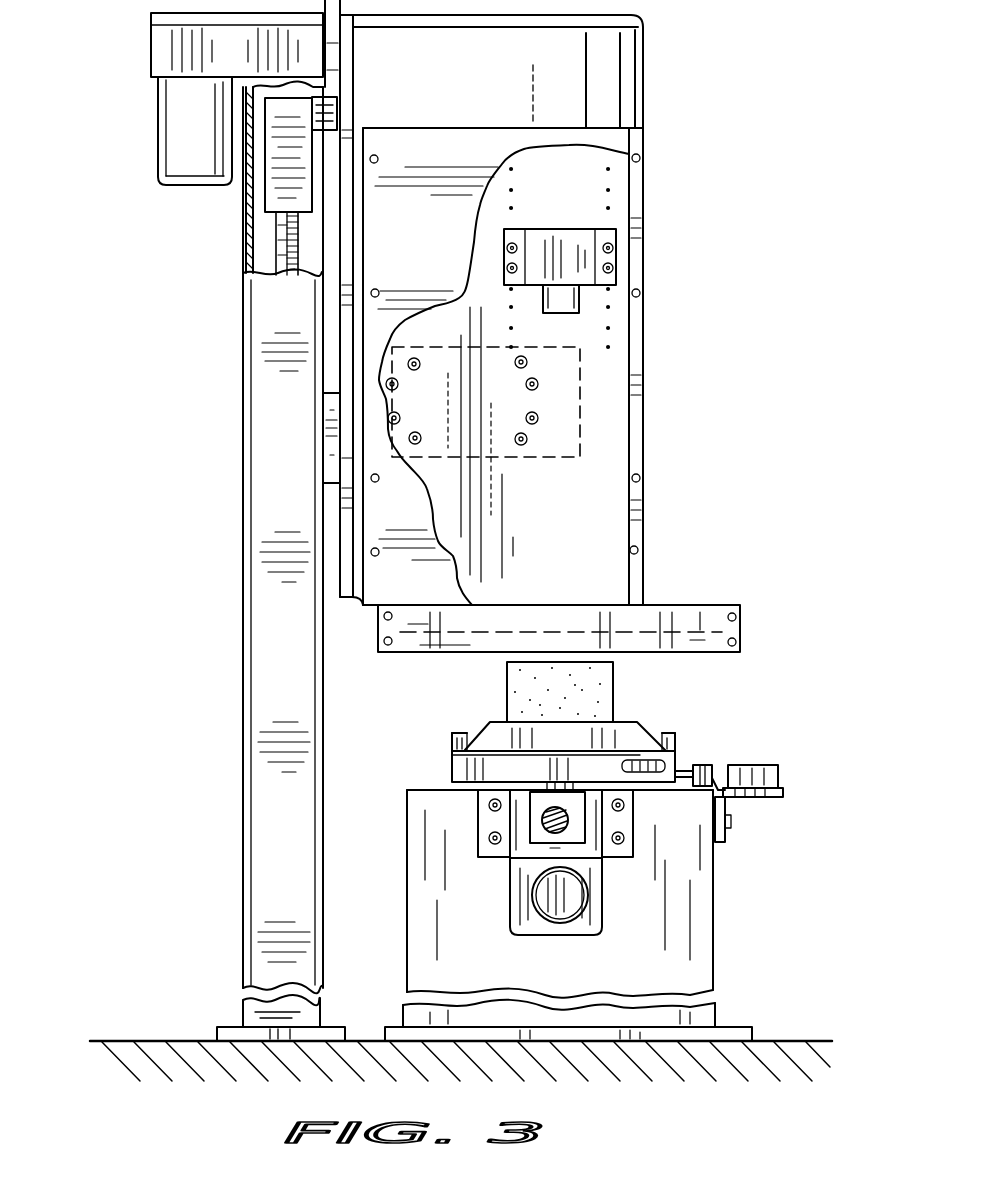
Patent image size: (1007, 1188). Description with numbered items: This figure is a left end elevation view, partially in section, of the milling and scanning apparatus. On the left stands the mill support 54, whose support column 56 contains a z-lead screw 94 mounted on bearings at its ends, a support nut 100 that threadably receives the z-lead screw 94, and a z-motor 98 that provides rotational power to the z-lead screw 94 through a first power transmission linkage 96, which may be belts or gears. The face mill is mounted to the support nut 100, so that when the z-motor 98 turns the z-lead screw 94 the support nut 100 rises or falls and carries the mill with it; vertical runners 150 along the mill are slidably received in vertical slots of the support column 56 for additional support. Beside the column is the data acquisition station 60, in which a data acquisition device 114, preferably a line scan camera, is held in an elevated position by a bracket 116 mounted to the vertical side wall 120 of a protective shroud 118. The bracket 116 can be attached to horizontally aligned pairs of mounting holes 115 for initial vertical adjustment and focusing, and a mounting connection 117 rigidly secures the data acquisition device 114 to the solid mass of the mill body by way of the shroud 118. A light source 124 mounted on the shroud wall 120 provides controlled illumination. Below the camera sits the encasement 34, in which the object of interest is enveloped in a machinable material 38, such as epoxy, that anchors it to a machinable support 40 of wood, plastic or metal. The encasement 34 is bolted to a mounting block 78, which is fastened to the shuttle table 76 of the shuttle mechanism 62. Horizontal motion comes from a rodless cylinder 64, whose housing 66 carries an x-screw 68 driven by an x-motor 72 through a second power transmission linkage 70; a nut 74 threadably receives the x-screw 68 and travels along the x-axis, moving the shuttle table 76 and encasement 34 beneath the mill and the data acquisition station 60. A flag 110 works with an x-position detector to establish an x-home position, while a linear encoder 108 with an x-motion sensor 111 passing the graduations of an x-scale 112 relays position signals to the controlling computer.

The encasement 34 is at (505, 670).
The machinable material 38 is at (530, 688).
The machinable support 40 is at (633, 728).
The mill support 54 is at (240, 724).
The support column 56 is at (242, 875).
The data acquisition station 60 is at (650, 250).
The shuttle mechanism 62 is at (677, 723).
The rodless cylinder 64 is at (478, 856).
The housing 66 is at (607, 982).
The x-screw 68 is at (568, 812).
The second power transmission linkage 70 is at (528, 938).
The x-motor 72 is at (586, 903).
The nut 74 is at (540, 803).
The shuttle table 76 is at (452, 770).
The mounting block 78 is at (452, 745).
The z-lead screw 94 is at (285, 243).
The first power transmission linkage 96 is at (165, 50).
The z-motor 98 is at (157, 140).
The support nut 100 is at (280, 198).
The linear encoder 108 is at (786, 753).
The flag 110 is at (672, 765).
The x-motion sensor 111 is at (775, 795).
The x-scale 112 is at (715, 782).
The data acquisition device 114 is at (562, 240).
The mounting holes 115 is at (610, 190).
The bracket 116 is at (612, 284).
The mounting connection 117 is at (551, 438).
The protective shroud 118 is at (648, 406).
The vertical side wall 120 is at (436, 254).
The light source 124 is at (642, 630).
The vertical runners 150 is at (330, 440).